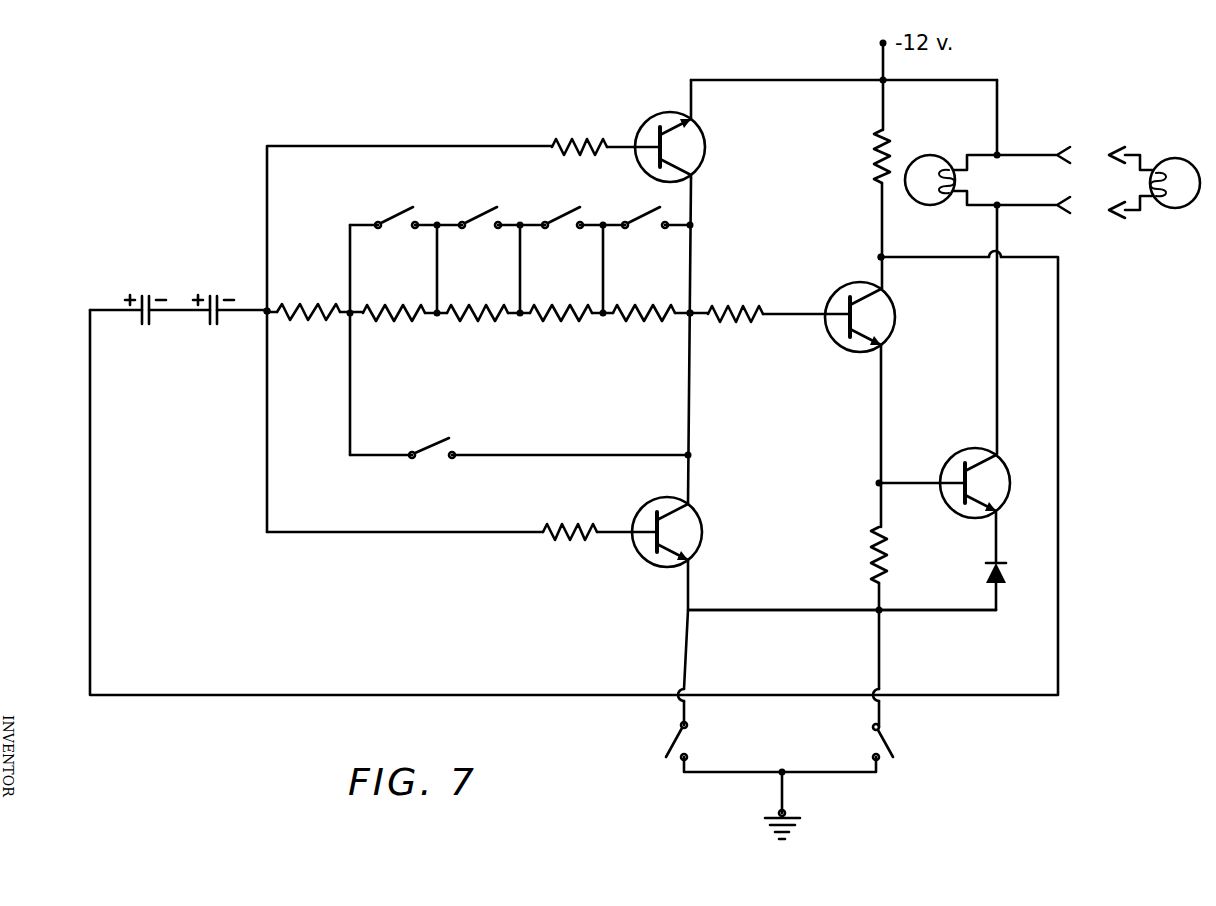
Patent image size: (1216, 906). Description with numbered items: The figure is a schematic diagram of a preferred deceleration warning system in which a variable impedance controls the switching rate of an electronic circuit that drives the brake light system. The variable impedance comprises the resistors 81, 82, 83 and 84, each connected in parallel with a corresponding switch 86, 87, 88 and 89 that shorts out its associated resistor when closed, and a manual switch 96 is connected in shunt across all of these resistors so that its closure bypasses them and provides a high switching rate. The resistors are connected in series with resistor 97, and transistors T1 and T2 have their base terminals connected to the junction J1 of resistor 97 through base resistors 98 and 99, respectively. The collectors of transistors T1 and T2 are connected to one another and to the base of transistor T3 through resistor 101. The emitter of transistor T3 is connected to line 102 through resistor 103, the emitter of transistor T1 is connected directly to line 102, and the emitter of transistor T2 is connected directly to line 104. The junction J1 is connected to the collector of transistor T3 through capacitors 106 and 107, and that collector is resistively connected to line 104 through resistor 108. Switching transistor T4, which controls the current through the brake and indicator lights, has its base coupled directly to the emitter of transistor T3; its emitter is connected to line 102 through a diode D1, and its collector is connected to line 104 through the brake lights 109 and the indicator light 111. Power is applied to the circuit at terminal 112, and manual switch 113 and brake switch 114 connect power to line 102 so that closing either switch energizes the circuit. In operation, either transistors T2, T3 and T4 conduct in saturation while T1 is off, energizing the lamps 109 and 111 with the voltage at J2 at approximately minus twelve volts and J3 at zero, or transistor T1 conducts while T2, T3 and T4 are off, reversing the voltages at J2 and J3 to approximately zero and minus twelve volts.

The resistor 81 is at (395, 300).
The resistor 82 is at (480, 300).
The resistor 83 is at (563, 300).
The resistor 84 is at (645, 300).
The switch 86 is at (407, 212).
The switch 87 is at (491, 212).
The switch 88 is at (577, 212).
The switch 89 is at (657, 212).
The manual switch 96 is at (460, 443).
The resistor 97 is at (305, 300).
The base resistor 98 is at (573, 543).
The base resistor 99 is at (577, 131).
The resistor 101 is at (733, 325).
The line 102 is at (752, 612).
The resistor 103 is at (868, 563).
The line 104 is at (767, 80).
The capacitor 106 is at (146, 293).
The capacitor 107 is at (214, 293).
The resistor 108 is at (871, 150).
The brake lights 109 is at (1176, 158).
The indicator light 111 is at (930, 155).
The terminal 112 is at (778, 817).
The manual switch 113 is at (686, 746).
The brake switch 114 is at (872, 748).
The transistor T1 is at (685, 532).
The transistor T2 is at (685, 131).
The transistor T3 is at (877, 317).
The switching transistor T4 is at (989, 483).
The diode D1 is at (1010, 574).
The junction J1 is at (263, 316).
The junction J2 is at (692, 312).
The junction J3 is at (878, 254).